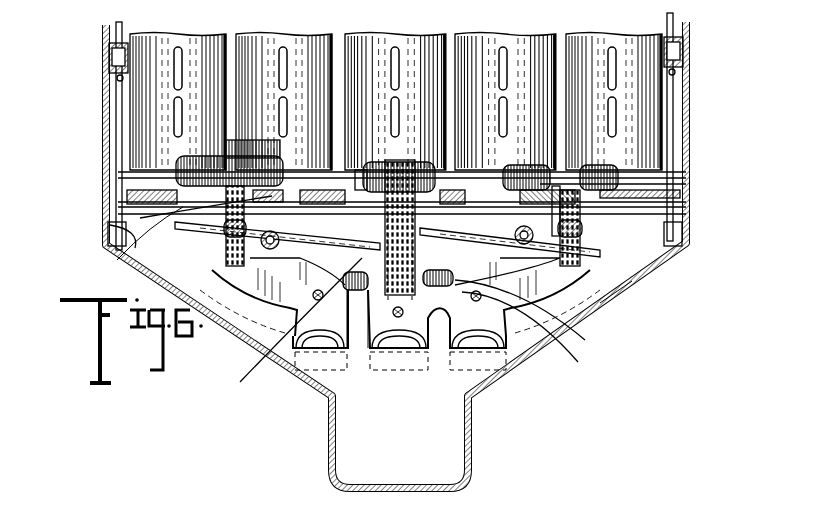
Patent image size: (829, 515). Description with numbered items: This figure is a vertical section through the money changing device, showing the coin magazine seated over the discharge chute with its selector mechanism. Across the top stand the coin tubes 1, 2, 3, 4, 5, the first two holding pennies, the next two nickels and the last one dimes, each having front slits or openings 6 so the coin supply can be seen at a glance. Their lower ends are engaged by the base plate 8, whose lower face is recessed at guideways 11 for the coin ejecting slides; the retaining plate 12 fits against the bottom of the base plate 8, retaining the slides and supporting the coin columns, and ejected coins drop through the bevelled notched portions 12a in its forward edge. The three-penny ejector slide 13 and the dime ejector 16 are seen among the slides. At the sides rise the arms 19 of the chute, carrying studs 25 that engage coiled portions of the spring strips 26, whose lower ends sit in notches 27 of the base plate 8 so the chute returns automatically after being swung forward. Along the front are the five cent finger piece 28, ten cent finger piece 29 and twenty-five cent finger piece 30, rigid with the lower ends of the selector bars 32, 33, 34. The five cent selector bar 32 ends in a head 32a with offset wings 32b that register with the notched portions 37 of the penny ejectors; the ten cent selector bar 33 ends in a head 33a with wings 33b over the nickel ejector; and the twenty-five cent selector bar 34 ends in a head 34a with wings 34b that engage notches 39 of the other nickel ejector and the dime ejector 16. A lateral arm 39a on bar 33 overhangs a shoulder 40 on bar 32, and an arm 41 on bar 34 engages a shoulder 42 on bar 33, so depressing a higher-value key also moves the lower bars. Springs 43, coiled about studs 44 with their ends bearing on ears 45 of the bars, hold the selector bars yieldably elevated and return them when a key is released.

The coin tube 1 is at (193, 42).
The coin tube 2 is at (278, 42).
The coin tube 3 is at (377, 50).
The coin tube 4 is at (536, 48).
The coin tube 5 is at (626, 50).
The slits or openings 6 is at (392, 116).
The base plate 8 is at (308, 188).
The guideways 11 is at (474, 190).
The retaining plate 12 is at (686, 190).
The notched or cut away portions 12a is at (112, 250).
The ejector slide 13 is at (127, 196).
The dime ejector 16 is at (641, 250).
The arms 19 is at (103, 160).
The studs 25 is at (109, 58).
The spring strips 26 is at (118, 115).
The notches 27 is at (108, 238).
The finger piece 28 is at (322, 346).
The finger piece 29 is at (402, 346).
The finger piece 30 is at (470, 346).
The selector bar 32 is at (246, 215).
The head 32a is at (245, 140).
The wings 32b is at (180, 166).
The selector bar 33 is at (416, 245).
The head 33a is at (372, 168).
The wings 33b is at (405, 162).
The selector bar 34 is at (574, 266).
The head 34a is at (620, 158).
The wings 34b is at (500, 168).
The notched portions 37 is at (272, 198).
The notches 39 is at (582, 222).
The lateral arm 39a is at (285, 300).
The shoulder 40 is at (291, 328).
The arm 41 is at (530, 319).
The shoulder 42 is at (526, 335).
The springs 43 is at (330, 240).
The studs 44 is at (397, 247).
The ears 45 is at (224, 215).